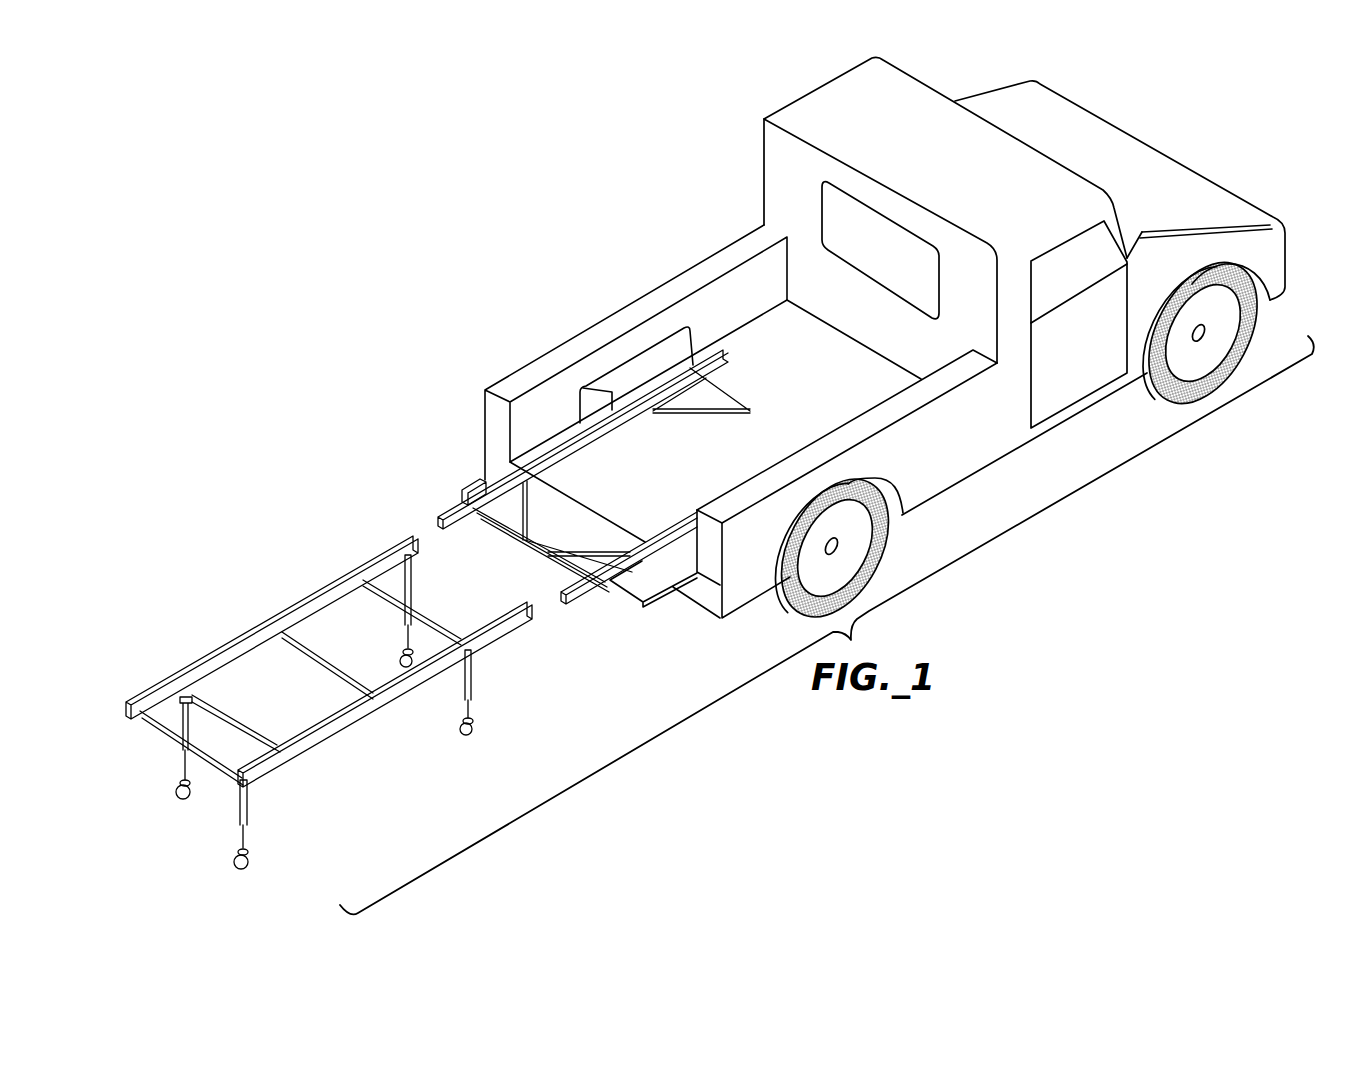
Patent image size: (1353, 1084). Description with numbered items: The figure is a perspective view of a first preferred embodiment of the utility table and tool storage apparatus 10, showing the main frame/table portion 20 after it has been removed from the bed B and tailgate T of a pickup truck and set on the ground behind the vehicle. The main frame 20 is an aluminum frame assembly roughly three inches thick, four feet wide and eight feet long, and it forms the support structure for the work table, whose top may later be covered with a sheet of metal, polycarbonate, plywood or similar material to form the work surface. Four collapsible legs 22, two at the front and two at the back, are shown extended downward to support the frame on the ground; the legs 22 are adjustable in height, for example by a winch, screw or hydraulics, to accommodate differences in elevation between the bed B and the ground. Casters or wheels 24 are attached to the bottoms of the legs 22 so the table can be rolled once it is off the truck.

The utility table and tool storage apparatus 10 is at (262, 380).
The bed B is at (745, 345).
The tailgate T is at (482, 480).
The main frame/table portion 20 is at (209, 652).
The legs 22 is at (247, 803).
The casters or wheels 24 is at (251, 863).